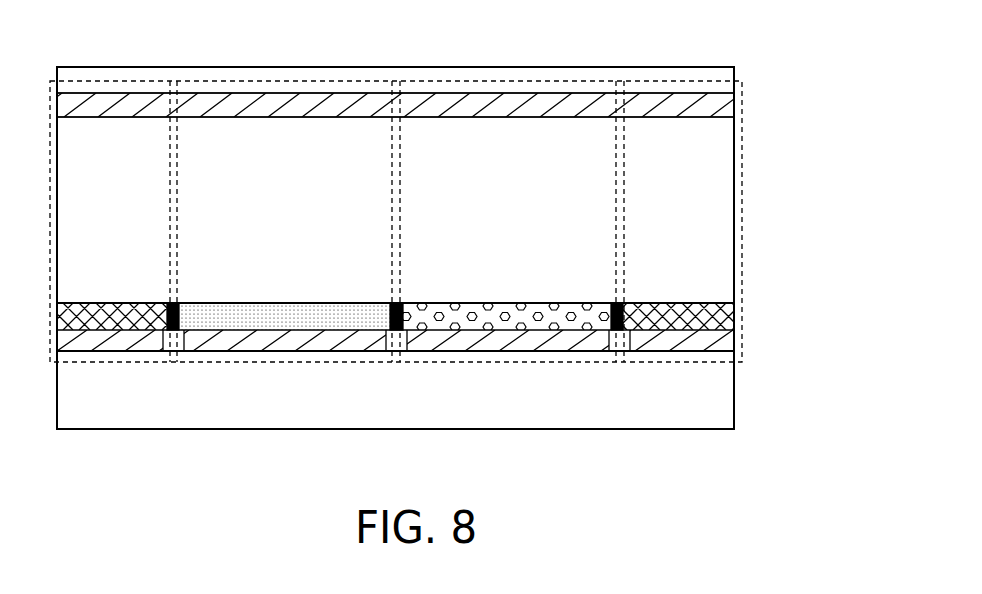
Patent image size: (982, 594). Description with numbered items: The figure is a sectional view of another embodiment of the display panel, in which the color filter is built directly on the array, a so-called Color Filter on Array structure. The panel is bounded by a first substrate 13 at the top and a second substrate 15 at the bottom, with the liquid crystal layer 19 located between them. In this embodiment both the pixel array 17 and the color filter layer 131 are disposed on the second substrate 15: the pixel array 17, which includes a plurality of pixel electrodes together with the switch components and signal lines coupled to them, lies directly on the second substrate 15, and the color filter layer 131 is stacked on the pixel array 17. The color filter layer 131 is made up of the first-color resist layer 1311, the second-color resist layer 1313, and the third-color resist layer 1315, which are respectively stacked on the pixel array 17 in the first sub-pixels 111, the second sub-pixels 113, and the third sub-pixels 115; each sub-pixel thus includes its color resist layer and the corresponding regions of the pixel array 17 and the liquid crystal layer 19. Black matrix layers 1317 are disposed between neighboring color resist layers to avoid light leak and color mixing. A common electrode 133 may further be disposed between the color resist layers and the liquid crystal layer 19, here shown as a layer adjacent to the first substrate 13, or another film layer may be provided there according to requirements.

The first substrate 13 is at (718, 73).
The common electrode 133 is at (718, 107).
The liquid crystal layer 19 is at (718, 192).
The color filter layer 131 is at (722, 316).
The pixel array 17 is at (720, 341).
The second substrate 15 is at (718, 394).
The third color sub-pixels 115 is at (109, 81).
The first color sub-pixels 111 is at (285, 81).
The second color sub-pixels 113 is at (509, 81).
The first-color resist layer 1311 is at (282, 318).
The second-color resist layer 1313 is at (478, 317).
The third-color resist layer 1315 is at (95, 318).
The black matrix layers 1317 is at (182, 313).